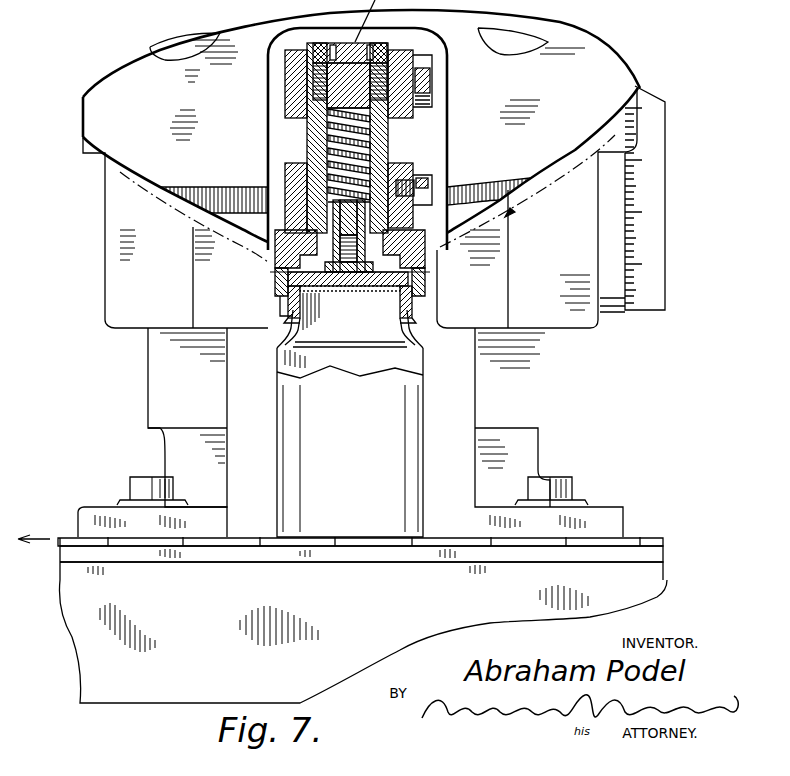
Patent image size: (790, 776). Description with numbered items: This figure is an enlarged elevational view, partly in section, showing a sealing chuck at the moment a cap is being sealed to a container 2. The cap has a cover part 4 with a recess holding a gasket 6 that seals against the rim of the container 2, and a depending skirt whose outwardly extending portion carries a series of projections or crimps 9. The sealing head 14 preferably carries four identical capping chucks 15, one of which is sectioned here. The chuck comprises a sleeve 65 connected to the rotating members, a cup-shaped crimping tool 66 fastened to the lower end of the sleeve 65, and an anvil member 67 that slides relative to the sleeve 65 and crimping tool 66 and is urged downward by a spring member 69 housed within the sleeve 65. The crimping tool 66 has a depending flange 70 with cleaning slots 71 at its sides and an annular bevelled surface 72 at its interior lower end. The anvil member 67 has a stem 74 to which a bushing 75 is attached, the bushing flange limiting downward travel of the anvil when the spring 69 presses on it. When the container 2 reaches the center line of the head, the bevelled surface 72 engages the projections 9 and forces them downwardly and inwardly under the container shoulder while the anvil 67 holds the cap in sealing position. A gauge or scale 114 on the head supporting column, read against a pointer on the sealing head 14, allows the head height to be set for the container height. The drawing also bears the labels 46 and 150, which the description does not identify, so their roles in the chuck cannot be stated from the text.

The container 2 is at (268, 492).
The cover part 4 is at (369, 288).
The gasket 6 is at (317, 289).
The projections or crimps 9 is at (290, 318).
The sealing head 14 is at (653, 529).
The capping chuck 15 is at (452, 293).
The sleeve 46 is at (292, 218).
The sleeve 65 is at (393, 137).
The crimping tool 66 is at (300, 242).
The anvil member 67 is at (347, 290).
The spring member 69 is at (380, 163).
The depending flange 70 is at (280, 304).
The cleaning slots 71 is at (290, 278).
The annular bevelled surface 72 is at (416, 330).
The stem 74 is at (410, 198).
The bushing 75 is at (433, 200).
The gauge or scale 114 is at (658, 195).
The cap assembly 150 is at (330, 80).